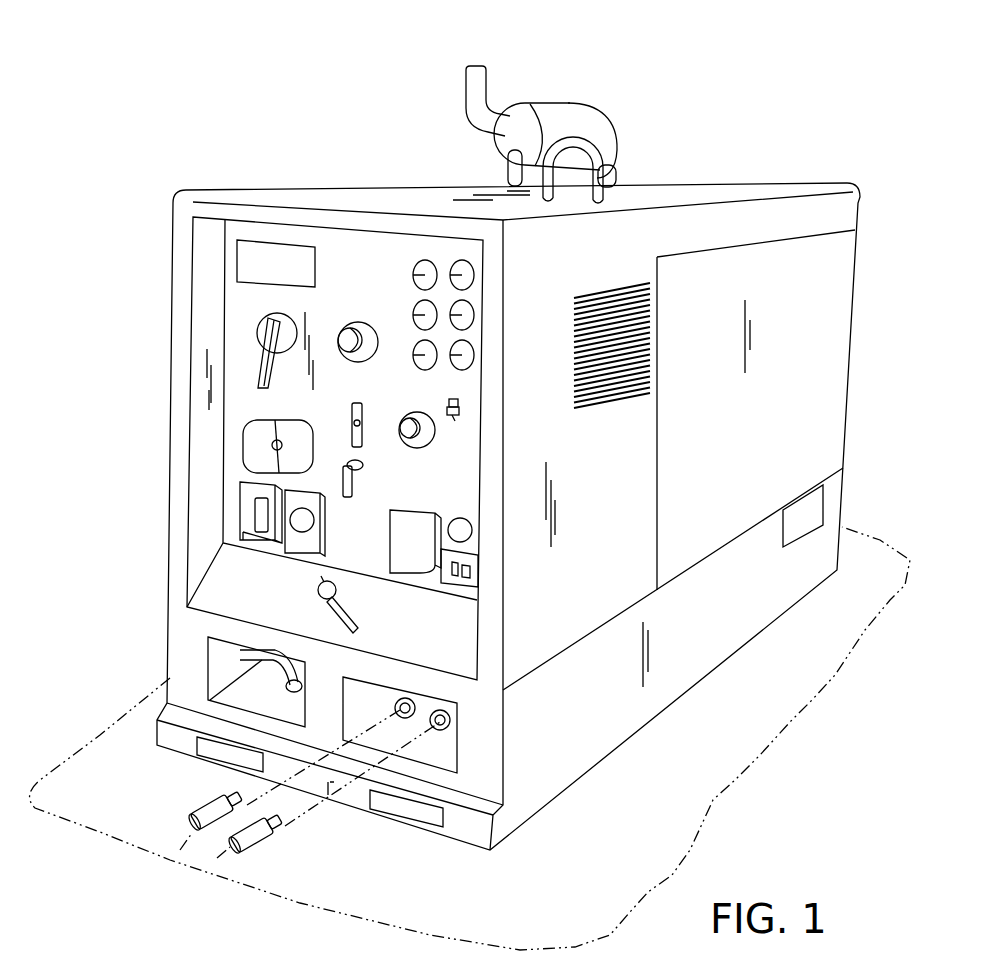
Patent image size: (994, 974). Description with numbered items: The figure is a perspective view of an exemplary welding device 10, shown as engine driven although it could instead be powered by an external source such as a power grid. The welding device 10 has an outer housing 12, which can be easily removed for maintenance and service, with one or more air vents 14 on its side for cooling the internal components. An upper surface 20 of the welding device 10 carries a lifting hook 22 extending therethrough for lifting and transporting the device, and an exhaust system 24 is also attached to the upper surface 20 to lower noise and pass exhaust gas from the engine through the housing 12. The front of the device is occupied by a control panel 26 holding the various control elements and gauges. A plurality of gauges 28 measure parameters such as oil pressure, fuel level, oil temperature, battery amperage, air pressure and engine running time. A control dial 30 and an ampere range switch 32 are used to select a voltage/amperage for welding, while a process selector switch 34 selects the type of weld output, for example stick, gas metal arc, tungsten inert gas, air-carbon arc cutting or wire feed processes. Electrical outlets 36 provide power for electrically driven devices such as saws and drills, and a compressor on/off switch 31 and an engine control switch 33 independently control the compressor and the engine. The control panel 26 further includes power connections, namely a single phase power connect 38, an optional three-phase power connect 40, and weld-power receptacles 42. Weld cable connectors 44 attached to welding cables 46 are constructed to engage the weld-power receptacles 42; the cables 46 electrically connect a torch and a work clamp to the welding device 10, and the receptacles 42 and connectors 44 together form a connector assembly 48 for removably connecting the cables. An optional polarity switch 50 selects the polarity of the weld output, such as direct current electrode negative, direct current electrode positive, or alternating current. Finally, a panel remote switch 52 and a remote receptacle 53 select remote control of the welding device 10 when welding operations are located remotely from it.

The welding device 10 is at (191, 128).
The outer housing 12 is at (627, 547).
The air vents 14 is at (615, 398).
The upper surface 20 is at (413, 193).
The lifting hook 22 is at (593, 173).
The exhaust system 24 is at (567, 112).
The control panel 26 is at (347, 310).
The gauges 28 is at (450, 357).
The control dial 30 is at (355, 365).
The compressor on/off switch 31 is at (455, 421).
The ampere range switch 32 is at (267, 363).
The engine control switch 33 is at (423, 447).
The process selector switch 34 is at (253, 447).
The electrical outlets 36 is at (260, 510).
The single phase power connect 38 is at (424, 548).
The three-phase power connect 40 is at (472, 532).
The weld-power receptacles 42 is at (396, 705).
The weld cable connectors 44 is at (322, 593).
The welding cables 46 is at (190, 824).
The connector assembly 48 is at (343, 848).
The polarity switch 50 is at (356, 407).
The panel remote switch 52 is at (362, 487).
The remote receptacle 53 is at (262, 673).